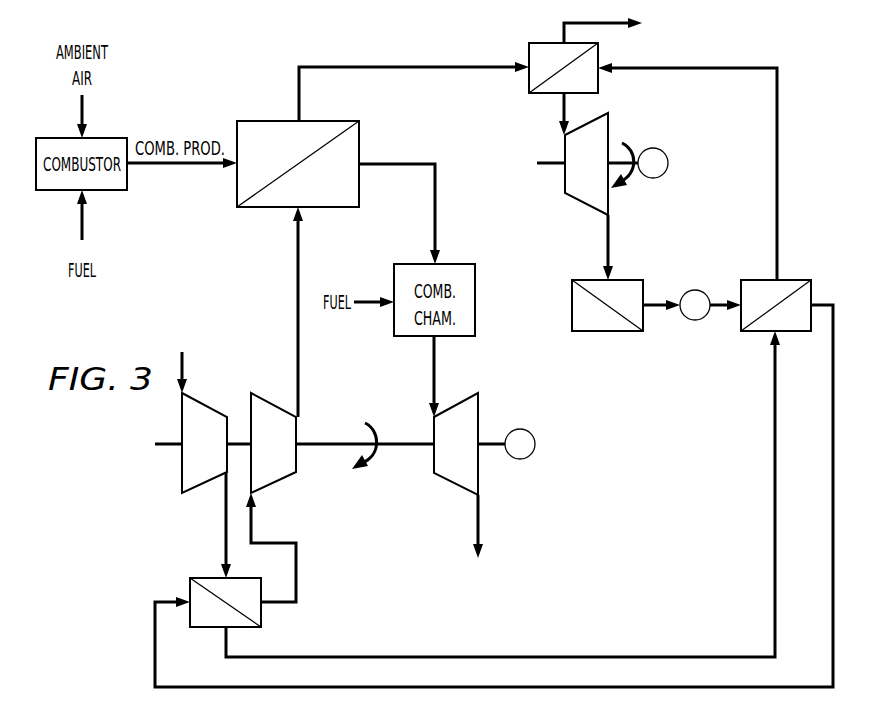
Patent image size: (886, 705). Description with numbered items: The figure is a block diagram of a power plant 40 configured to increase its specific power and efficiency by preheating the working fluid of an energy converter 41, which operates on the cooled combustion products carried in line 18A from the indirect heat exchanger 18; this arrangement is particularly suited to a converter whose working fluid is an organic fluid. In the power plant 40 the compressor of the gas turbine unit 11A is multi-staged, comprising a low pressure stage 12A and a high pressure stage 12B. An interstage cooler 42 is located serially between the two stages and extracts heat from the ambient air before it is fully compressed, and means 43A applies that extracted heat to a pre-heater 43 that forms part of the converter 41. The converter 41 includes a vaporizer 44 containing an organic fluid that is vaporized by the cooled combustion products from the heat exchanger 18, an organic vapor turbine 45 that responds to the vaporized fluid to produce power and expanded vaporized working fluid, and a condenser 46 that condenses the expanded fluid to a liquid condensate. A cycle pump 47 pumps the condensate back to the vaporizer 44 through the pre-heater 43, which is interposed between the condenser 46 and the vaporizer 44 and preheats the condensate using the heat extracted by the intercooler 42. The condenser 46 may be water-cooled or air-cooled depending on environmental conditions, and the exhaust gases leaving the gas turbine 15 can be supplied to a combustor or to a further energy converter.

The power plant 40 is at (96, 440).
The gas turbine unit 11A is at (346, 488).
The low pressure stage 12A is at (185, 495).
The high pressure stage 12B is at (296, 485).
The gas turbine 15 is at (480, 398).
The indirect heat exchanger 18 is at (329, 121).
The line 18A is at (298, 76).
The energy converter 41 is at (688, 105).
The interstage cooler 42 is at (263, 610).
The pre-heater 43 is at (752, 331).
The means 43A is at (507, 657).
The vaporizer 44 is at (600, 91).
The organic vapor turbine 45 is at (577, 200).
The condenser 46 is at (614, 331).
The cycle pump 47 is at (696, 290).